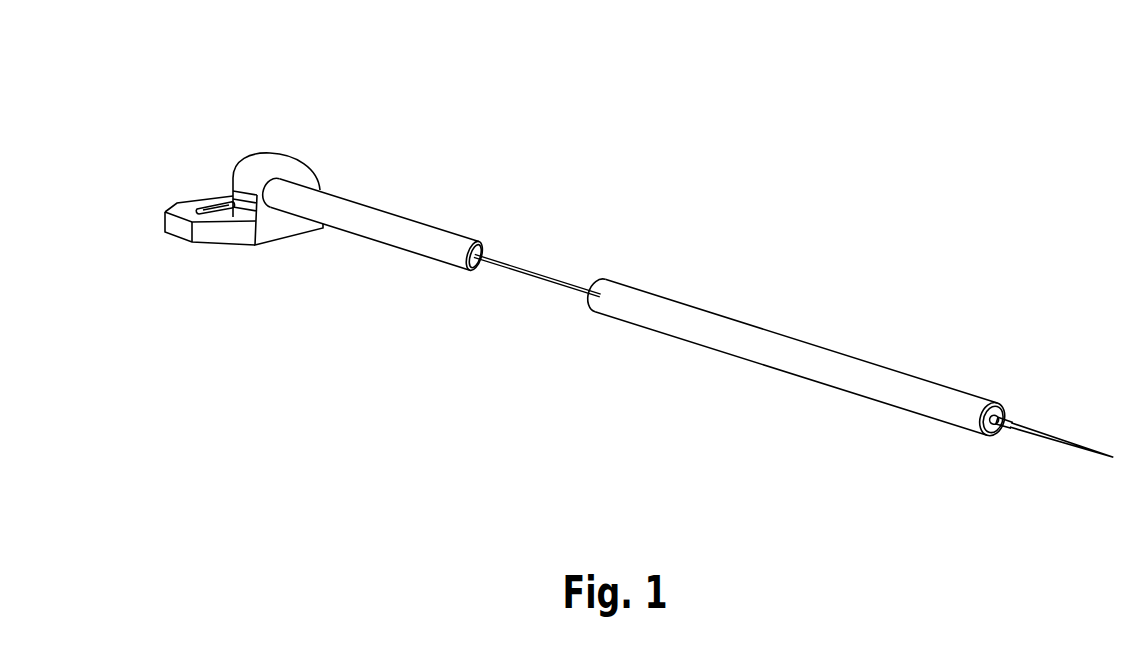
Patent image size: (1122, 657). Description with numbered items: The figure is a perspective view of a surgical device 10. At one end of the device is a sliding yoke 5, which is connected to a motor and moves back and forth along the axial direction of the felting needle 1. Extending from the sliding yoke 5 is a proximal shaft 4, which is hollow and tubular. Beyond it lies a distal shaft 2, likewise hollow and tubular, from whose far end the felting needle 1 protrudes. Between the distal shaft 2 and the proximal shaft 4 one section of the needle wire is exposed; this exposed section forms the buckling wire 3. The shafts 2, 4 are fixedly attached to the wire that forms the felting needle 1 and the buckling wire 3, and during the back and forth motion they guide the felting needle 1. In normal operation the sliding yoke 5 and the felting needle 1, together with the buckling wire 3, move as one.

The surgical device 10 is at (212, 63).
The sliding yoke 5 is at (253, 178).
The proximal shaft 4 is at (313, 207).
The buckling wire 3 is at (542, 277).
The distal shaft 2 is at (835, 360).
The felting needle 1 is at (1010, 420).